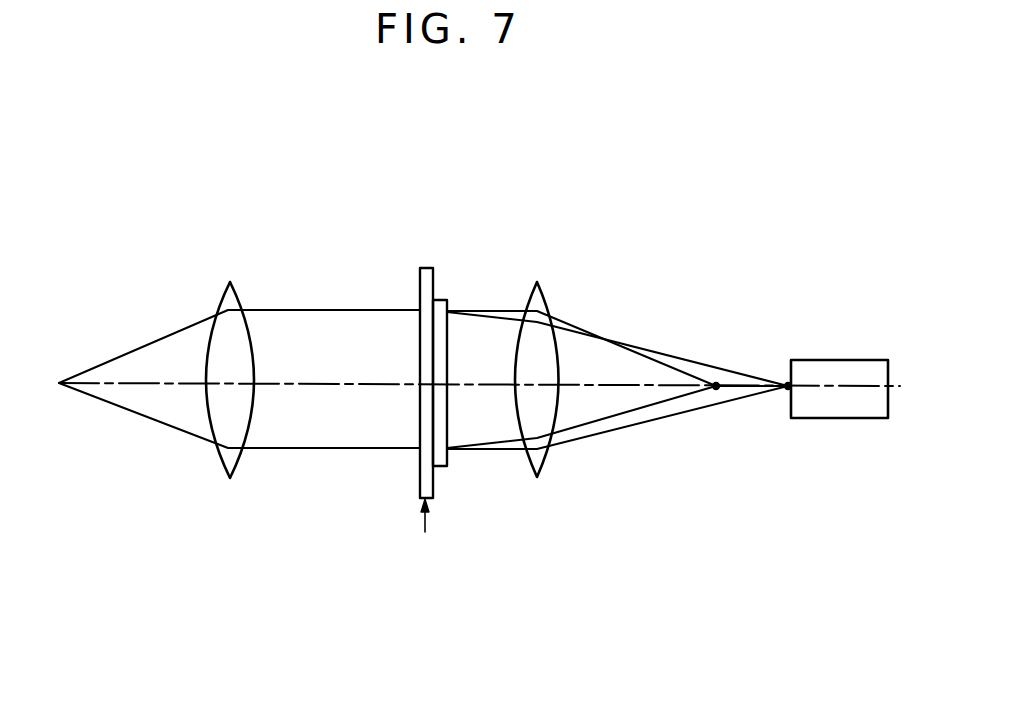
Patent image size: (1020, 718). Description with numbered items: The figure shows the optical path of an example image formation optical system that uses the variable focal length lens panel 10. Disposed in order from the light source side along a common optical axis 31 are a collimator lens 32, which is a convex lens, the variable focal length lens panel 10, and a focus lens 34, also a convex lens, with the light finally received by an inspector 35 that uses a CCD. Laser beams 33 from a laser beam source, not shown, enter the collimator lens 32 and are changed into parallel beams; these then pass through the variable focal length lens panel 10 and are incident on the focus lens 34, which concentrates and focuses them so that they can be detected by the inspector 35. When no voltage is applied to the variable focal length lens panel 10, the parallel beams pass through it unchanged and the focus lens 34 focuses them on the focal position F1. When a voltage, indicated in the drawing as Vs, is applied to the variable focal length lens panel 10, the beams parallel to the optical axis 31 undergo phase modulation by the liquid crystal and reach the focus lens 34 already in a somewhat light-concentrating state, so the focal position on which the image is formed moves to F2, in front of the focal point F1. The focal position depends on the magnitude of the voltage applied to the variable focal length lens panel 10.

The variable focal length lens panel 10 is at (428, 268).
The optical axis 31 is at (321, 385).
The collimator lens 32 is at (230, 283).
The laser beams 33 is at (157, 422).
The focus lens 34 is at (540, 283).
The inspector 35 is at (840, 368).
The focal position F1 is at (787, 384).
The focal position F2 is at (716, 384).
The drive voltage signal Vs is at (431, 536).